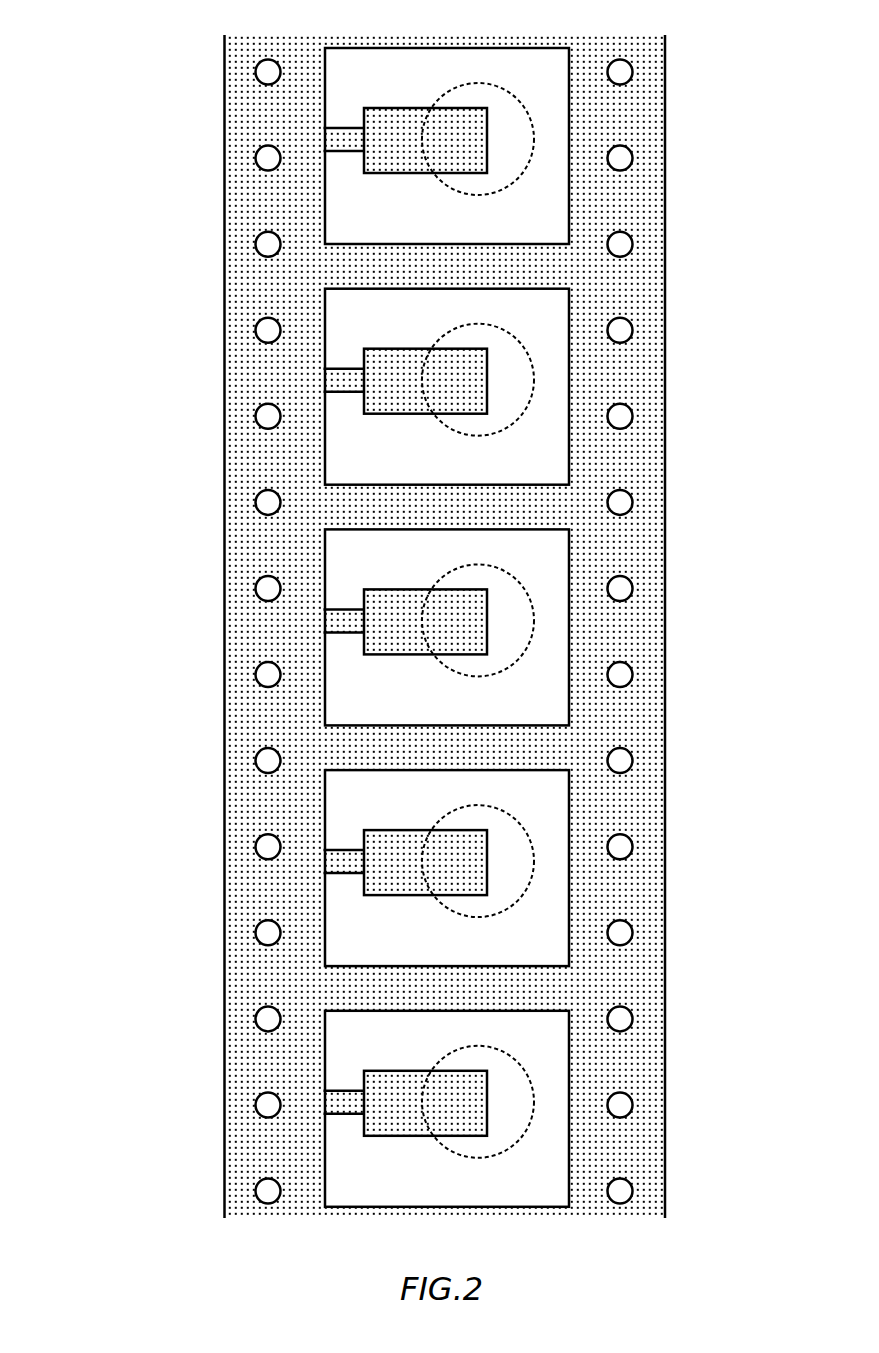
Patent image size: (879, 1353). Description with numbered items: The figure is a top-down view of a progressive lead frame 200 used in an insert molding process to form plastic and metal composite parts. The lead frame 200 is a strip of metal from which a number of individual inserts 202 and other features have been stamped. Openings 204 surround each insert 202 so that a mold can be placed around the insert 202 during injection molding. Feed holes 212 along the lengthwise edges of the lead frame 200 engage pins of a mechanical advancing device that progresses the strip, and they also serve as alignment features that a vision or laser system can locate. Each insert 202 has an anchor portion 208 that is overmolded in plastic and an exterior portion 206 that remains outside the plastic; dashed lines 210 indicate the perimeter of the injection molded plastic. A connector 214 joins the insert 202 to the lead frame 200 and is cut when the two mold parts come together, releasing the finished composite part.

The progressive lead frame 200 is at (154, 50).
The insert 202 is at (404, 422).
The opening 204 is at (540, 480).
The exterior portion 206 is at (373, 357).
The anchor portion 208 is at (460, 360).
The dashed lines (perimeter of injection molded plastic) 210 is at (535, 382).
The feed hole 212 is at (620, 159).
The connector 214 is at (350, 378).